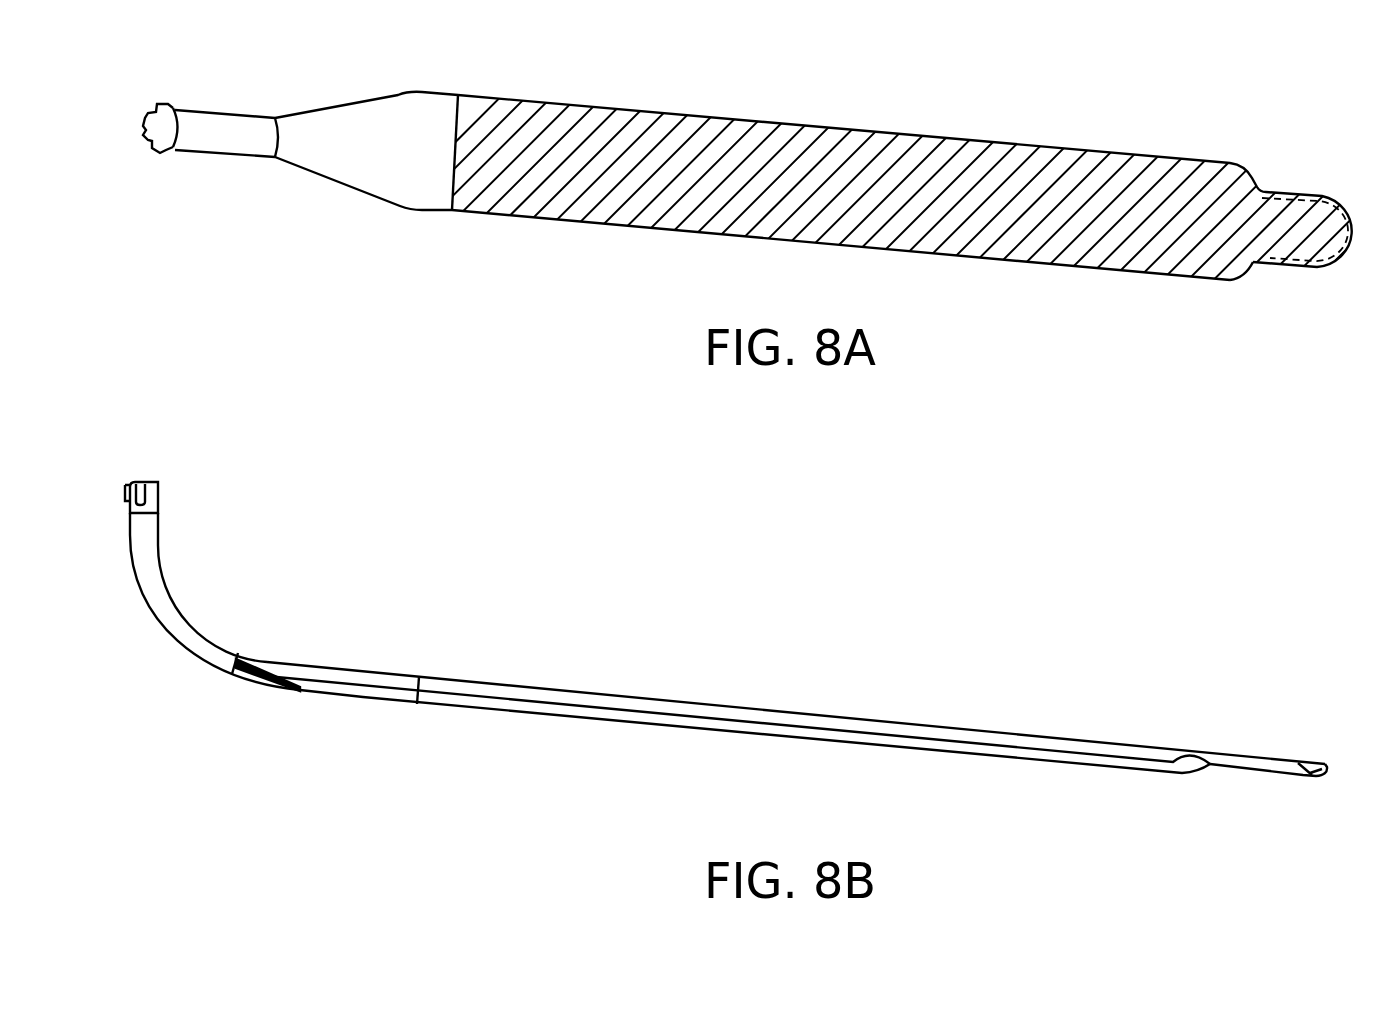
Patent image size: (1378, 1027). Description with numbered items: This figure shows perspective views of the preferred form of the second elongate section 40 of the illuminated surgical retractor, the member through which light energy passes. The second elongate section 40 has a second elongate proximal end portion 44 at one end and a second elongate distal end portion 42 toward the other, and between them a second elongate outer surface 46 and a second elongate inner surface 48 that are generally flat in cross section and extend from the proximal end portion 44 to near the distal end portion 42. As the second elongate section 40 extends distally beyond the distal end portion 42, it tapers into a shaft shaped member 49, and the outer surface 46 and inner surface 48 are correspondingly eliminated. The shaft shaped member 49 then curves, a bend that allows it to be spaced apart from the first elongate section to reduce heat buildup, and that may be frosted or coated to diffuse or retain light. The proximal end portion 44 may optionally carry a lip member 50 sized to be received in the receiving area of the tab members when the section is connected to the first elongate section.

In FIG. 8A, the second elongate section 40 is at (485, 95).
In FIG. 8B, the second elongate section 40 is at (590, 692).
In FIG. 8A, the second elongate distal end portion 42 is at (558, 101).
In FIG. 8B, the second elongate distal end portion 42 is at (435, 677).
In FIG. 8A, the second elongate proximal end portion 44 is at (1163, 160).
In FIG. 8A, the second elongate outer surface 46 is at (925, 165).
In FIG. 8B, the second elongate outer surface 46 is at (730, 705).
In FIG. 8B, the second elongate inner surface 48 is at (458, 715).
In FIG. 8A, the shaft shaped member 49 is at (197, 140).
In FIG. 8B, the shaft shaped member 49 is at (155, 575).
In FIG. 8A, the lip member 50 is at (1302, 190).
In FIG. 8B, the lip member 50 is at (1248, 752).